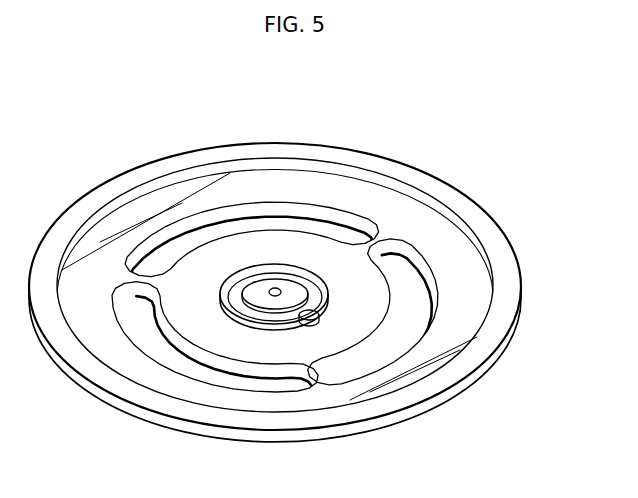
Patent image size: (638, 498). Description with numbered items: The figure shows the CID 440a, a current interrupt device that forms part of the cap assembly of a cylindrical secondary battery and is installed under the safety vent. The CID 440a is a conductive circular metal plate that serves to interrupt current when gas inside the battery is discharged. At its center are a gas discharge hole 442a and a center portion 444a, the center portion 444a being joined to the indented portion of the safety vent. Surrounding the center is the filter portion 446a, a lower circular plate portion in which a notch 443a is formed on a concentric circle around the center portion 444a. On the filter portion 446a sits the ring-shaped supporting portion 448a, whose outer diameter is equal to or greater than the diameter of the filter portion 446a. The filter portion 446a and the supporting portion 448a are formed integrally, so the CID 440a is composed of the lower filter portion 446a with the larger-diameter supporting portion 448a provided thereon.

The CID 440a is at (104, 97).
The gas discharge hole 442a is at (420, 298).
The notch 443a is at (323, 287).
The center portion 444a is at (258, 287).
The filter portion 446a is at (408, 217).
The supporting portion 448a is at (503, 267).